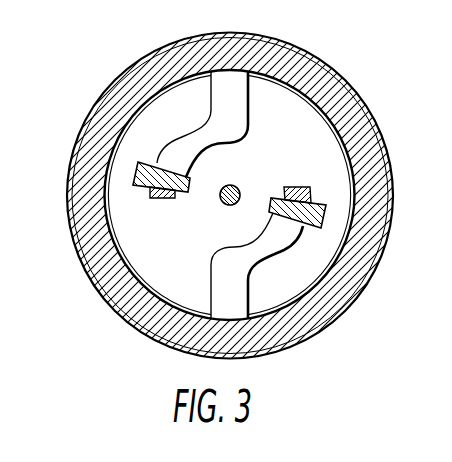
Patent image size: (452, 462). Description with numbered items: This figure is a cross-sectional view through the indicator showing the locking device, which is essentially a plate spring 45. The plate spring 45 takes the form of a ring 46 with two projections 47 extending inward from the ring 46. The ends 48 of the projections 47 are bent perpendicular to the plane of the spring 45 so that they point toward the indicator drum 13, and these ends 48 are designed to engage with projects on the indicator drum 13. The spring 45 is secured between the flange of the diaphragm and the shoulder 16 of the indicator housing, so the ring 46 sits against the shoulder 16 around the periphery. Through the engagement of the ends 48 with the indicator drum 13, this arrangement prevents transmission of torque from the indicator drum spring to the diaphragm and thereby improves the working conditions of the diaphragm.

The indicator drum 13 is at (134, 188).
The shoulder 16 is at (283, 50).
The plate spring 45 is at (370, 89).
The ring 46 is at (348, 158).
The projections 47 is at (241, 130).
The ends 48 is at (285, 188).